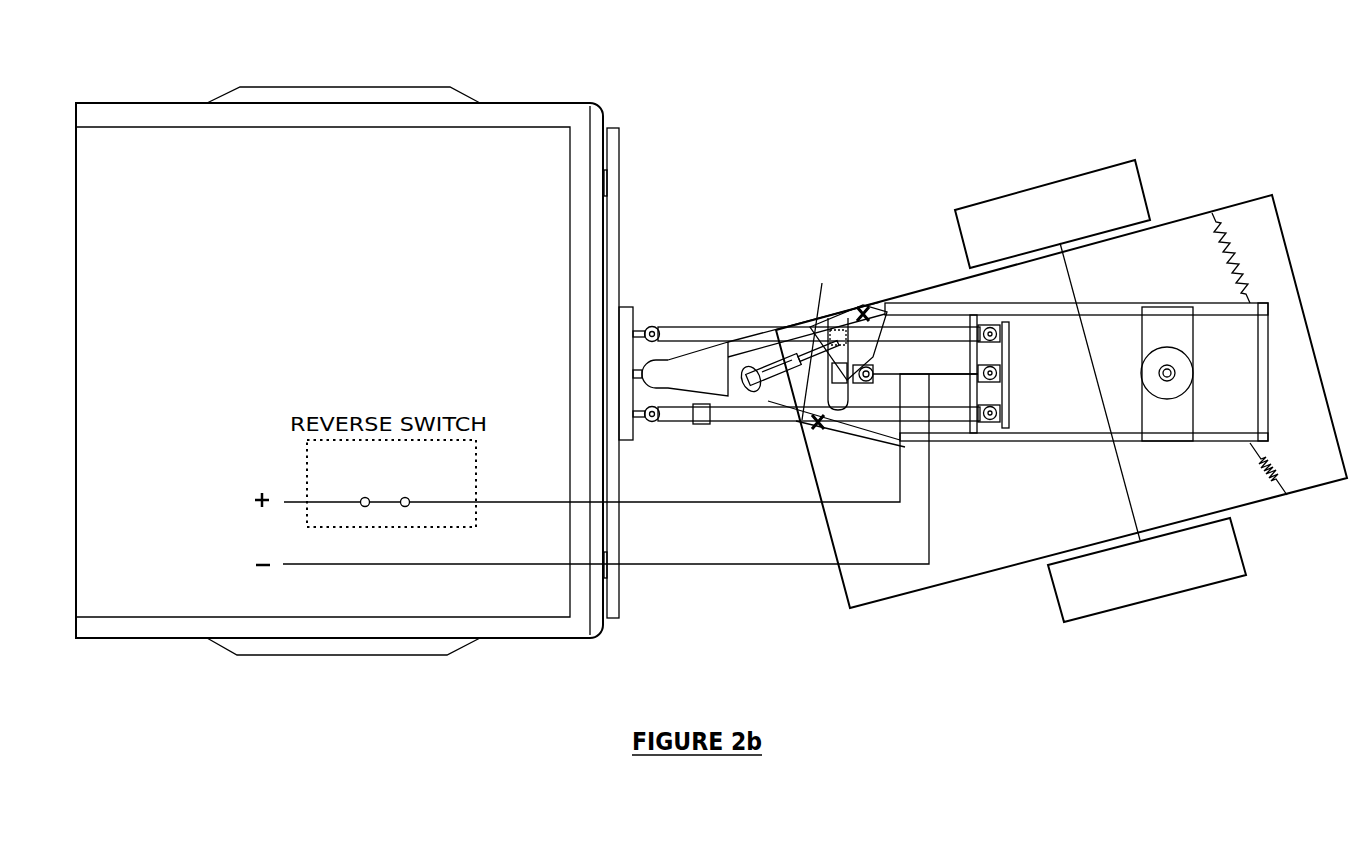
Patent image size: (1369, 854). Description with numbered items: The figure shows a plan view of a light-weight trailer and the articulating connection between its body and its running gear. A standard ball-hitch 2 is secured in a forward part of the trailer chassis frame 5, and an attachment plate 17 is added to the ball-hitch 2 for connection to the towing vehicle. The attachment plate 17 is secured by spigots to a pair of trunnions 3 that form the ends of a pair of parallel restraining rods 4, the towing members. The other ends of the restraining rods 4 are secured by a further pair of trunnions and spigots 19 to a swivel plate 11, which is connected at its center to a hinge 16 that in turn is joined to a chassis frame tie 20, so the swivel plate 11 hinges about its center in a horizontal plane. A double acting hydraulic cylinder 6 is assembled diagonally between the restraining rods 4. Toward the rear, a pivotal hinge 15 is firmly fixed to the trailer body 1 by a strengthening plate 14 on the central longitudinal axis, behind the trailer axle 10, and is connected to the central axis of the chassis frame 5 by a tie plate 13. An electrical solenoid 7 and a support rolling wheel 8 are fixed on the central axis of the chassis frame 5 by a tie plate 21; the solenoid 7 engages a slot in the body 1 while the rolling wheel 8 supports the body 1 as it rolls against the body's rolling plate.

The trailer body 1 is at (1278, 223).
The ball-hitch 2 is at (657, 372).
The trunnions 3 is at (655, 325).
The restraining rods 4 is at (730, 325).
The chassis frame 5 is at (1023, 303).
The double acting hydraulic cylinder 6 is at (765, 378).
The electrical solenoid 7 is at (873, 378).
The support rolling wheel 8 is at (844, 338).
The trailer axle 10 is at (1068, 278).
The swivel plate 11 is at (1010, 376).
The tie plate 13 is at (1163, 392).
The strengthening plate 14 is at (1167, 322).
The pivotal hinge 15 is at (1175, 380).
The hinge 16 is at (985, 368).
The attachment plate 17 is at (607, 372).
The trunnions and spigots 19 is at (990, 333).
The chassis frame tie 20 is at (967, 398).
The tie plate 21 is at (806, 426).